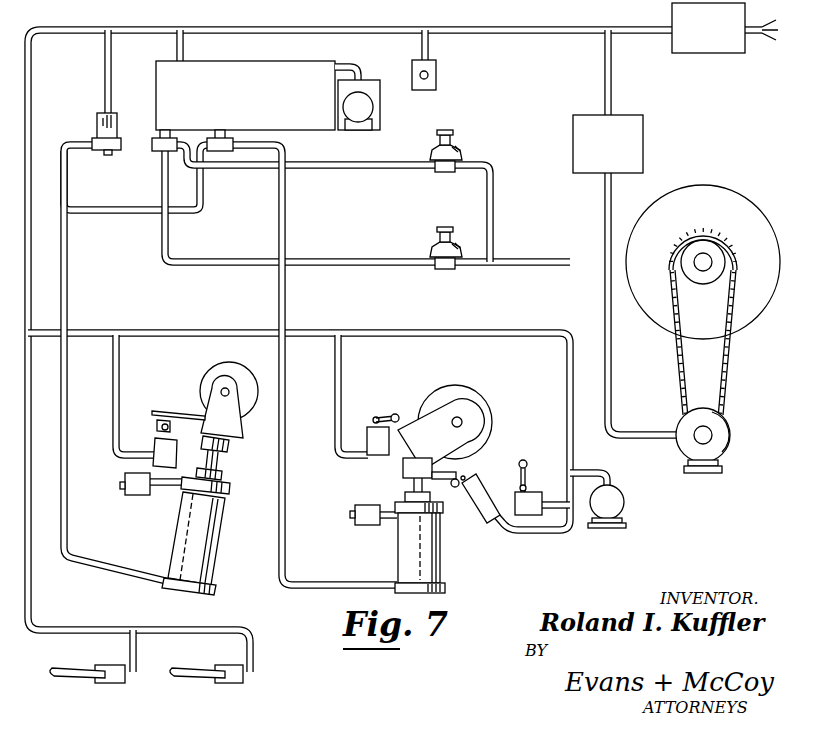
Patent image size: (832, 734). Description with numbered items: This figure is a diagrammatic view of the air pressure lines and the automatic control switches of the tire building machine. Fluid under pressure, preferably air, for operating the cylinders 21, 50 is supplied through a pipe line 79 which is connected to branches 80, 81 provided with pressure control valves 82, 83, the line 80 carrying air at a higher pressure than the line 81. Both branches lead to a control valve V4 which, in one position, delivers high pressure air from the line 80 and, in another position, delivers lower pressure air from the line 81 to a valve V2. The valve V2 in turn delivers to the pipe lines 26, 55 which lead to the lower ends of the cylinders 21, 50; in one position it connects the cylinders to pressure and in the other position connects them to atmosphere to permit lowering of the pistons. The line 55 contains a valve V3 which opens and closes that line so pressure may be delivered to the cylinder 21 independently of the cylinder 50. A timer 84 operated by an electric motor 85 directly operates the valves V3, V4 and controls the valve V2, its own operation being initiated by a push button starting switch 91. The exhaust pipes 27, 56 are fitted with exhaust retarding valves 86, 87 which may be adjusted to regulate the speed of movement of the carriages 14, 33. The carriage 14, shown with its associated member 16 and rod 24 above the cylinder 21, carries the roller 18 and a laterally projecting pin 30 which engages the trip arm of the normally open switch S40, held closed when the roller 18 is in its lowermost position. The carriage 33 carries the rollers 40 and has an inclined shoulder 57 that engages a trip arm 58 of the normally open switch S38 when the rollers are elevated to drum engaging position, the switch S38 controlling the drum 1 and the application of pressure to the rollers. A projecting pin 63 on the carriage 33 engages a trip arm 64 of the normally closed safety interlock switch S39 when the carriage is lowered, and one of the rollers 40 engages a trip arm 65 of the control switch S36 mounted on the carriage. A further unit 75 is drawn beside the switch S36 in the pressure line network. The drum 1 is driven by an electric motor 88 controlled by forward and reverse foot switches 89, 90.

The drum 1 is at (746, 196).
The carriage 14 is at (231, 449).
The arm block 16 is at (206, 387).
The roller 18 is at (219, 367).
The cylinder 21 is at (215, 553).
The piston rod 24 is at (232, 484).
The pipe line 26 is at (67, 433).
The exhaust pipe 27 is at (166, 488).
The laterally projecting pin 30 is at (195, 413).
The carriage 33 is at (402, 462).
The rollers 40 is at (479, 412).
The cylinder 50 is at (408, 549).
The pipe line 55 is at (97, 213).
The exhaust pipe 56 is at (386, 506).
The inclined shoulder 57 is at (414, 418).
The trip arm 58 is at (392, 401).
The projecting pin 63 is at (458, 473).
The trip arm 64 is at (462, 497).
The trip arm 65 is at (520, 461).
The pump 75 is at (613, 498).
The pipe line 79 is at (541, 266).
The branch line 80 is at (405, 168).
The branch line 81 is at (387, 266).
The pressure control valve 82 is at (461, 151).
The pressure control valve 83 is at (433, 250).
The timer 84 is at (256, 68).
The electric motor 85 is at (372, 107).
The exhaust retarding valve 86 is at (131, 495).
The exhaust retarding valve 87 is at (366, 526).
The electric motor 88 is at (728, 450).
The forward foot switch 89 is at (118, 684).
The reverse foot switch 90 is at (232, 684).
The starting switch 91 is at (440, 75).
The valve V2 is at (94, 122).
The valve V3 is at (218, 151).
The control valve V4 is at (158, 153).
The control switch S36 is at (532, 492).
The switch S38 is at (366, 432).
The switch S39 is at (490, 521).
The control switch S40 is at (148, 432).